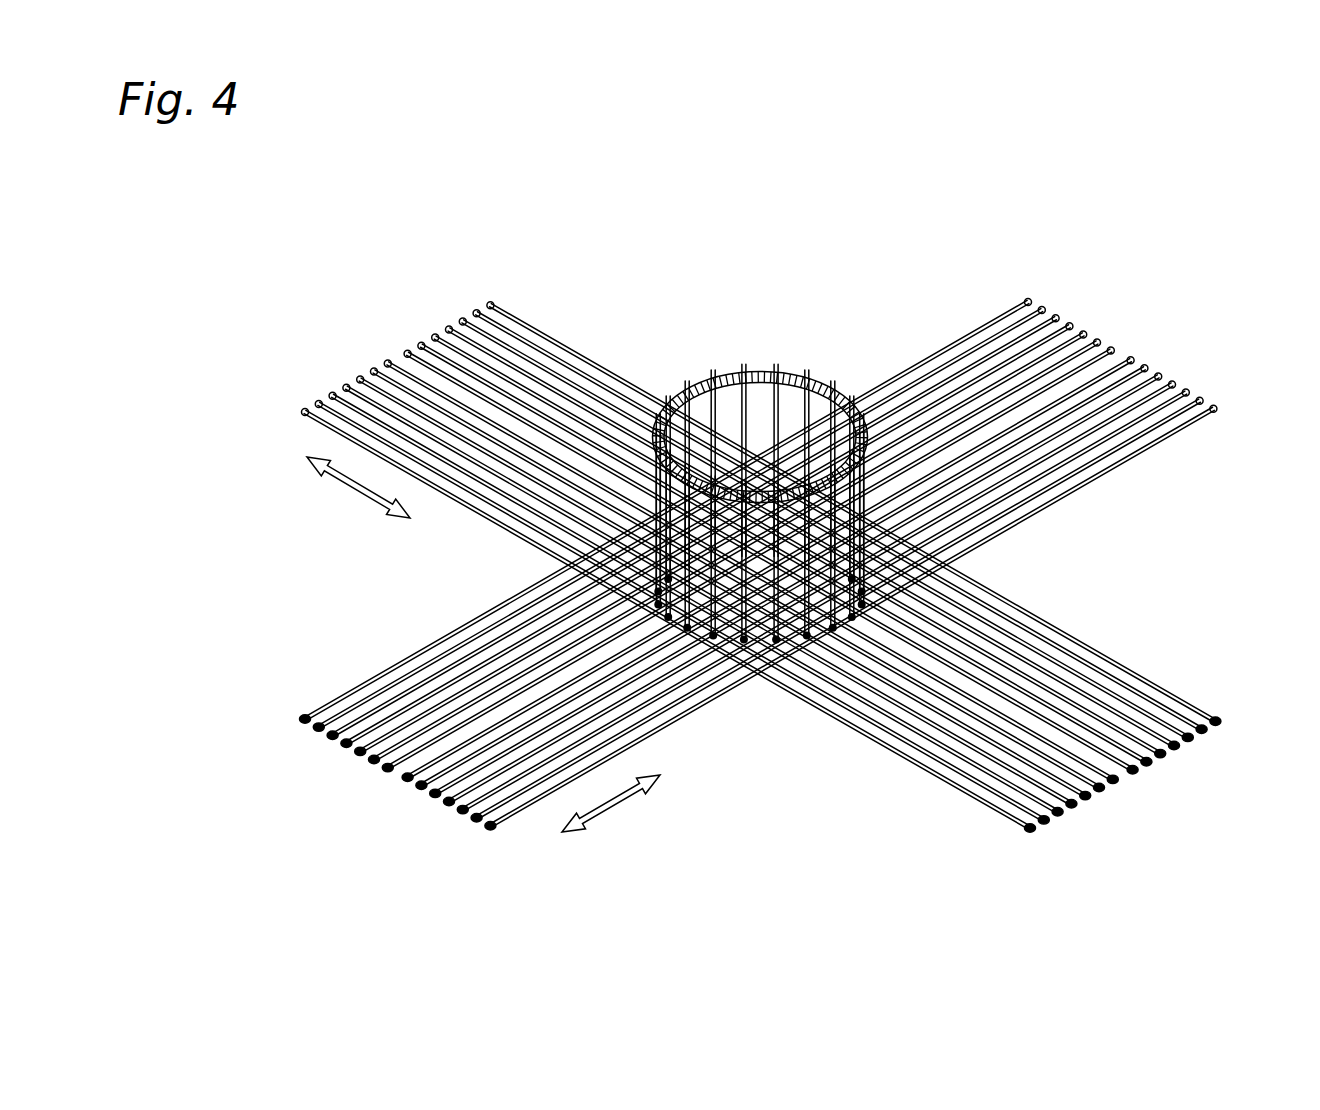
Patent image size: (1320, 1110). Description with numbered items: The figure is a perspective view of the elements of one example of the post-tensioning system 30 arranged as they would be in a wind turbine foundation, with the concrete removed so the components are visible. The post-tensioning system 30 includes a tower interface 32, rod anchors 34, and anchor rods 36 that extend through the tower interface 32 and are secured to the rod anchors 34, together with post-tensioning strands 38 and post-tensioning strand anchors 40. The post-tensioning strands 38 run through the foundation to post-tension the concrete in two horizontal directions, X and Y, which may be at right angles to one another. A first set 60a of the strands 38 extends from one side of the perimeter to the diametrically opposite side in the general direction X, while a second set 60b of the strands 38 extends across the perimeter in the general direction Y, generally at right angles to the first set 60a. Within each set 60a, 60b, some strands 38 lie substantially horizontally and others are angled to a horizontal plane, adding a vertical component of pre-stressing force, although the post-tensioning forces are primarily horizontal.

The post-tensioning system 30 is at (869, 218).
The tower interface 32 is at (718, 385).
The rod anchors 34 is at (730, 642).
The anchor rods 36 is at (985, 574).
The post-tensioning strands 38 is at (500, 594).
The post-tensioning strand anchors 40 is at (345, 388).
The first set of strands 60a is at (974, 310).
The second set of strands 60b is at (558, 316).